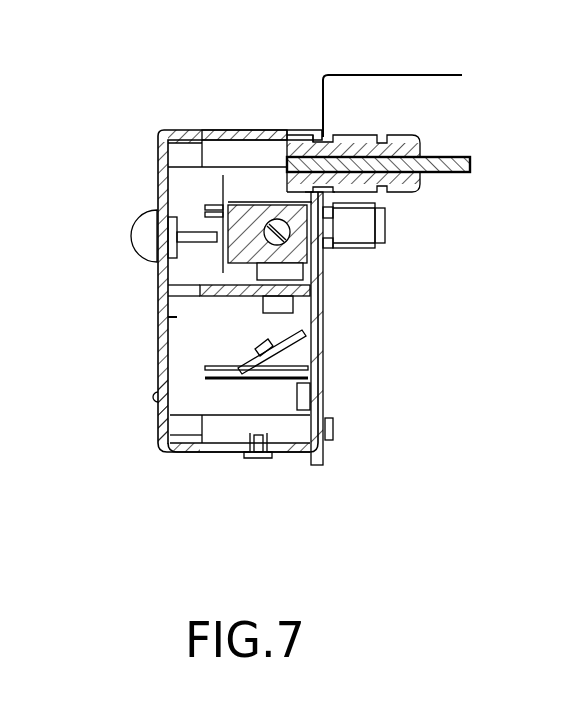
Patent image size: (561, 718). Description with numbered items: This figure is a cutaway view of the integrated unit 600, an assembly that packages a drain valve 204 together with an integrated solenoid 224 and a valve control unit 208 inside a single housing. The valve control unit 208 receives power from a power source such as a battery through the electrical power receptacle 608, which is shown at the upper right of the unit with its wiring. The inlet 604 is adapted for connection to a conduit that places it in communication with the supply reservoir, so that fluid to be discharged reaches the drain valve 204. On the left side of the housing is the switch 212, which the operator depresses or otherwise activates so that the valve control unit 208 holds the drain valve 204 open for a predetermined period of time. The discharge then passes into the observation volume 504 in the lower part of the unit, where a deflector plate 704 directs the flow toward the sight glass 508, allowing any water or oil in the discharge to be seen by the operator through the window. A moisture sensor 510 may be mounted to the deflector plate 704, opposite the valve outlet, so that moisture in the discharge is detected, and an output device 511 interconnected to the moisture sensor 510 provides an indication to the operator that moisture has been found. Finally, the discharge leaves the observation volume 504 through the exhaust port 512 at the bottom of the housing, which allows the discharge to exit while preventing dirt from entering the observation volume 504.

The integrated unit 600 is at (228, 118).
The electrical power receptacle 608 is at (417, 130).
The inlet 604 is at (385, 218).
The drain valve 204 is at (350, 228).
The valve control unit 208 is at (350, 228).
The solenoid 224 is at (302, 252).
The moisture sensor 510 is at (283, 326).
The deflector plate 704 is at (283, 353).
The switch 212 is at (128, 234).
The sight glass 508 is at (158, 362).
The output device 511 is at (158, 397).
The observation volume 504 is at (185, 388).
The exhaust port 512 is at (259, 458).